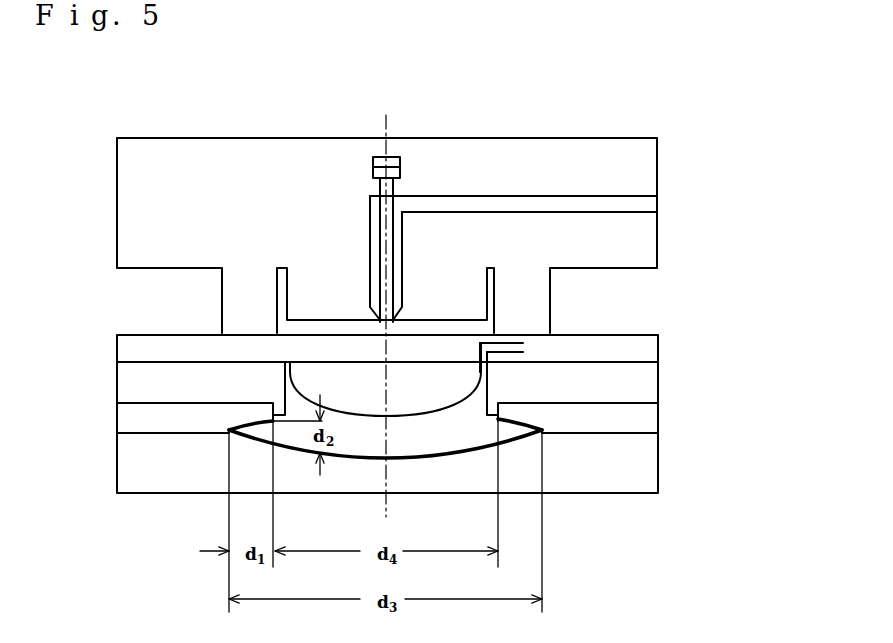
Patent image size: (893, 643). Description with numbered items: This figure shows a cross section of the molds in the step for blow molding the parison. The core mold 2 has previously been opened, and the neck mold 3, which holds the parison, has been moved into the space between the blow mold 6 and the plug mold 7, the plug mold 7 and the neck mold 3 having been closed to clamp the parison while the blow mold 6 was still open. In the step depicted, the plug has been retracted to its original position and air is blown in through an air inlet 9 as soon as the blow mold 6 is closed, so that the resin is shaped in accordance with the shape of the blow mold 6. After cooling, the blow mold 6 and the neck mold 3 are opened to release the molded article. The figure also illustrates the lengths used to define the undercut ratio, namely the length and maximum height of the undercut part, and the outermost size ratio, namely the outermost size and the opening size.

The core mold 2 is at (198, 227).
The plug mold 7 is at (180, 347).
The air inlet 9 is at (526, 345).
The neck mold 3 is at (643, 415).
The blow mold 6 is at (642, 463).